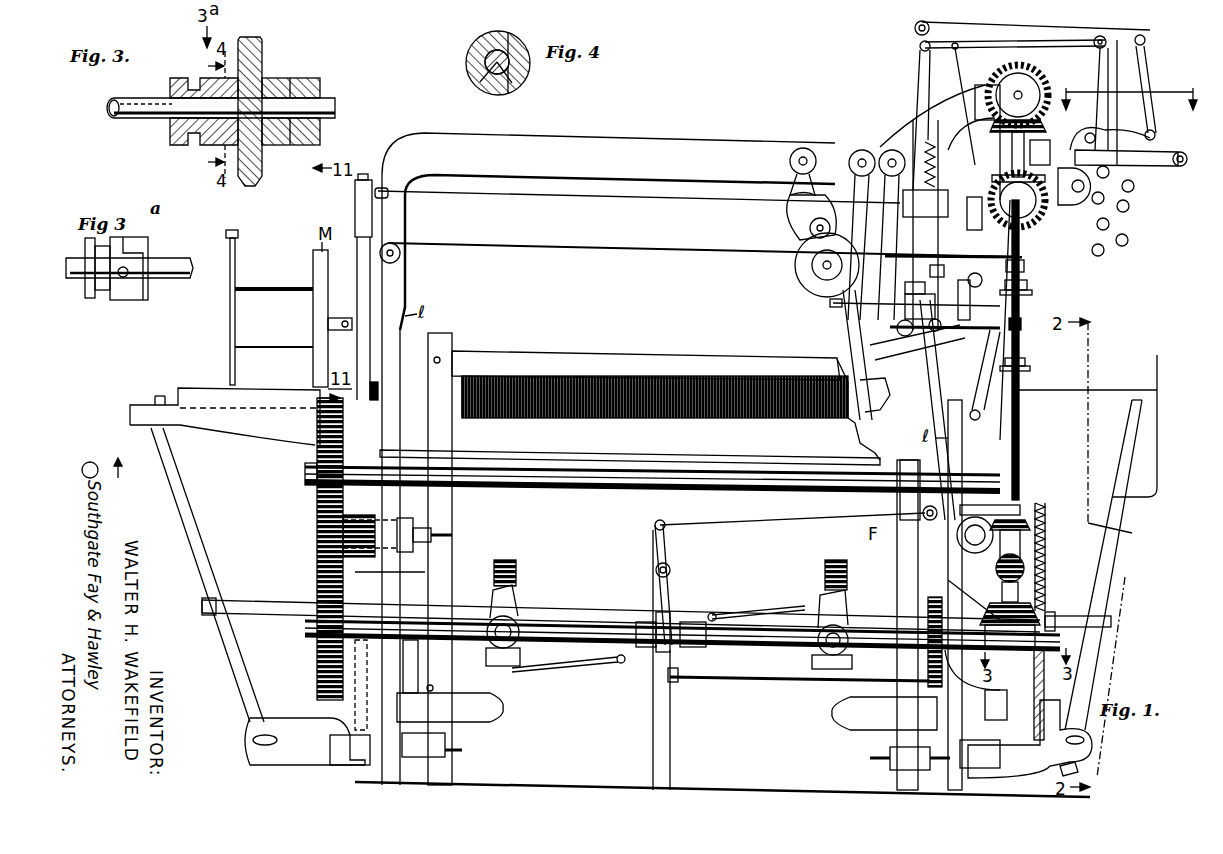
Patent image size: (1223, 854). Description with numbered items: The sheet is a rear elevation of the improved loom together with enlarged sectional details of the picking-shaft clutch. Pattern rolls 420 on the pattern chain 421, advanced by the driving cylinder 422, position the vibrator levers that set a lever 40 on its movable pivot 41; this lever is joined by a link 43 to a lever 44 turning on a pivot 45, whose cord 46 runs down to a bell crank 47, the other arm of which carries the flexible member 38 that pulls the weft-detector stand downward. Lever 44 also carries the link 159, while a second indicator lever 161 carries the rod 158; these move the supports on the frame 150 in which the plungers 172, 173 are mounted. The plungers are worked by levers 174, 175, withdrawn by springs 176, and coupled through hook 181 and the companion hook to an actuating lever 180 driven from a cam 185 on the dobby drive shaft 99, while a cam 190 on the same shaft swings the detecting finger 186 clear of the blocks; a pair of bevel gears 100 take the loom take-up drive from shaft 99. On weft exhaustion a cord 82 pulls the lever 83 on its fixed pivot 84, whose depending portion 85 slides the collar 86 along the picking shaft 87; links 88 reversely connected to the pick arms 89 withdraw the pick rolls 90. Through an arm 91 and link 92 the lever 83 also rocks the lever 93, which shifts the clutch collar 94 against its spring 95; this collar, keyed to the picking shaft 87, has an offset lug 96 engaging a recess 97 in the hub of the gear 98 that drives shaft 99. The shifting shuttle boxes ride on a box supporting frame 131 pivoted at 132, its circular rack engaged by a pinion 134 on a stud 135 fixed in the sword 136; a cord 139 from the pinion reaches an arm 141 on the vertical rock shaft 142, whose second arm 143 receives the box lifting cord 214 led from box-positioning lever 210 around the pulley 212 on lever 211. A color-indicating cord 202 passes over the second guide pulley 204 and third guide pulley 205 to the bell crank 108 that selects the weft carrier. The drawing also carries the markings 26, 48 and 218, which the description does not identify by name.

In FIG. 3, the picking shaft 87 is at (326, 104).
In FIG. 3A, the picking shaft 87 is at (172, 262).
In FIG. 4, the picking shaft 87 is at (486, 60).
In FIG. 1, the picking shaft 87 is at (608, 606).
In FIG. 3, the clutch collar 94 is at (172, 84).
In FIG. 3A, the clutch collar 94 is at (100, 298).
In FIG. 3, the gear 98 is at (262, 72).
In FIG. 3A, the gear 98 is at (149, 244).
In FIG. 4, the gear 98 is at (522, 75).
In FIG. 3A, the offset lug 96 is at (140, 282).
In FIG. 4, the offset lug 96 is at (500, 92).
In FIG. 3A, the recess 97 is at (123, 280).
In FIG. 4, the recess 97 is at (480, 82).
In FIG. 1, the box supporting frame 131 is at (276, 422).
In FIG. 1, the pinion 134 is at (360, 557).
In FIG. 1, the sword 136 is at (445, 516).
In FIG. 1, the stud 135 is at (455, 536).
In FIG. 1, the cord 139 is at (428, 572).
In FIG. 1, the vertical rock shaft 142 is at (372, 285).
In FIG. 1, the second arm 143 is at (390, 194).
In FIG. 1, the second guide pulley 204 is at (401, 254).
In FIG. 1, the third guide pulley 205 is at (380, 392).
In FIG. 1, the bell crank 108 is at (432, 345).
In FIG. 1, the box lifting chain or cord 214 is at (640, 198).
In FIG. 1, the cord or flexible element 202 is at (662, 249).
In FIG. 1, the lever 83 is at (666, 545).
In FIG. 1, the fixed pivot 84 is at (671, 570).
In FIG. 1, the depending portion 85 is at (670, 610).
In FIG. 1, the collar 86 is at (690, 648).
In FIG. 1, the cord 82 is at (745, 522).
In FIG. 1, the link 92 is at (740, 680).
In FIG. 1, the arm 91 is at (680, 675).
In FIG. 1, the pick arms 89 is at (518, 568).
In FIG. 1, the pick rolls 90 is at (505, 558).
In FIG. 1, the links 88 is at (556, 668).
In FIG. 1, the pivot 132 is at (464, 752).
In FIG. 1, the arm 141 is at (322, 760).
In FIG. 1, the spring 95 is at (947, 642).
In FIG. 1, the bracket 48 is at (975, 690).
In FIG. 1, the lever 93 is at (1000, 680).
In FIG. 1, the bell crank 47 is at (1022, 318).
In FIG. 1, the dobby drive shaft 99 is at (1021, 392).
In FIG. 1, the wire or flexible member 38 is at (1020, 456).
In FIG. 1, the bevel gears 100 is at (1012, 518).
In FIG. 1, the cam 185 is at (1027, 362).
In FIG. 1, the cam 190 is at (1030, 288).
In FIG. 1, the collar 218 is at (1026, 265).
In FIG. 1, the box-positioning lever 211 is at (806, 148).
In FIG. 1, the box-positioning lever 210 is at (862, 150).
In FIG. 1, the pulley 212 is at (800, 272).
In FIG. 1, the link 159 is at (885, 230).
In FIG. 1, the rod 158 is at (940, 265).
In FIG. 1, the plunger 173 is at (832, 306).
In FIG. 1, the lever 175 is at (845, 342).
In FIG. 1, the springs 176 is at (880, 412).
In FIG. 1, the hook 181 is at (914, 346).
In FIG. 1, the actuating lever 180 is at (910, 339).
In FIG. 1, the detecting finger 186 is at (938, 338).
In FIG. 1, the plunger 172 is at (959, 308).
In FIG. 1, the frame 150 is at (979, 286).
In FIG. 1, the lever 174 is at (988, 375).
In FIG. 1, the cord 46 is at (958, 140).
In FIG. 1, the second indicator lever 161 is at (914, 32).
In FIG. 1, the lever 44 is at (1062, 36).
In FIG. 1, the pivot 45 is at (1098, 50).
In FIG. 1, the link 43 is at (1152, 90).
In FIG. 1, the lever 40 is at (1150, 128).
In FIG. 1, the movable pivot 41 is at (1176, 152).
In FIG. 1, the section line 26 is at (1141, 110).
In FIG. 1, the driving cylinder 422 is at (1134, 188).
In FIG. 1, the pattern rolls 420 is at (1128, 210).
In FIG. 1, the pattern chain 421 is at (1128, 243).